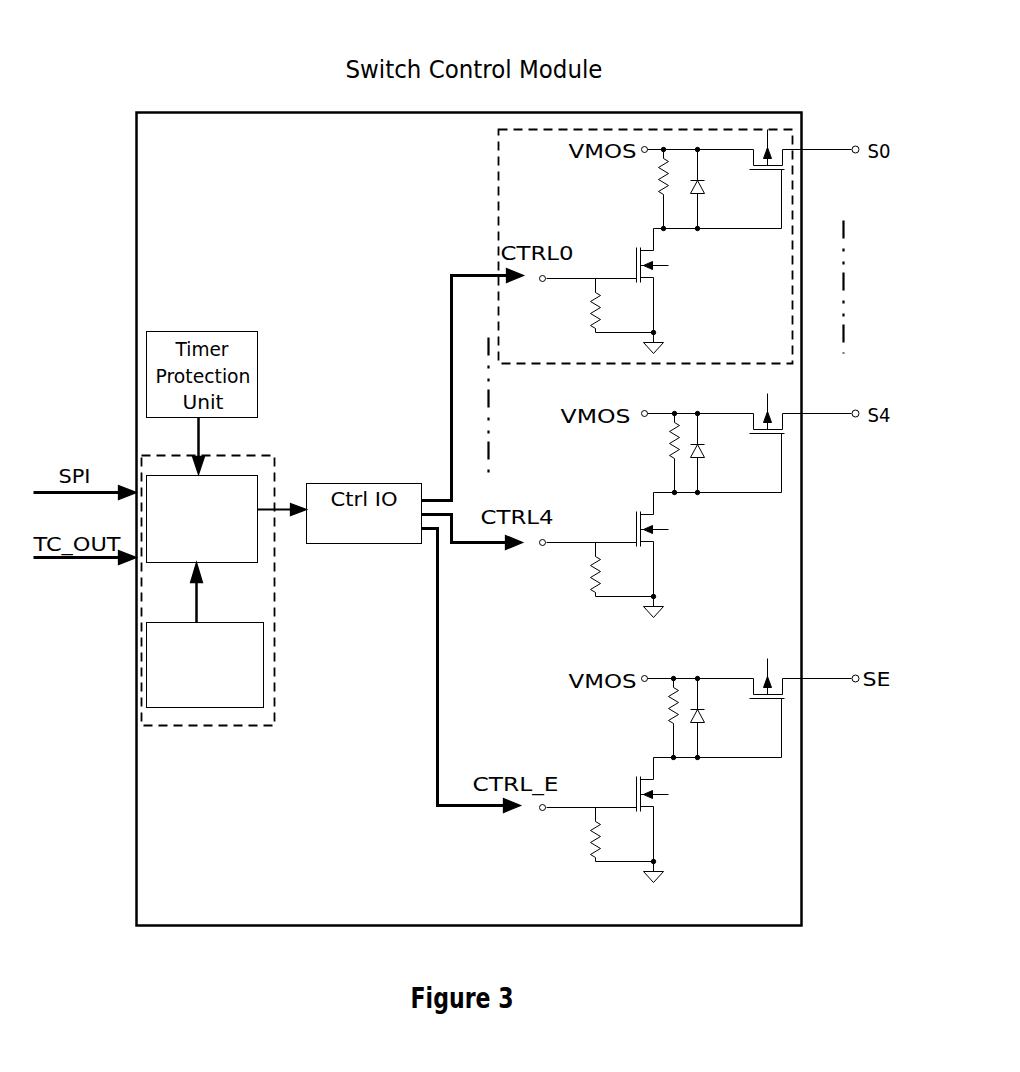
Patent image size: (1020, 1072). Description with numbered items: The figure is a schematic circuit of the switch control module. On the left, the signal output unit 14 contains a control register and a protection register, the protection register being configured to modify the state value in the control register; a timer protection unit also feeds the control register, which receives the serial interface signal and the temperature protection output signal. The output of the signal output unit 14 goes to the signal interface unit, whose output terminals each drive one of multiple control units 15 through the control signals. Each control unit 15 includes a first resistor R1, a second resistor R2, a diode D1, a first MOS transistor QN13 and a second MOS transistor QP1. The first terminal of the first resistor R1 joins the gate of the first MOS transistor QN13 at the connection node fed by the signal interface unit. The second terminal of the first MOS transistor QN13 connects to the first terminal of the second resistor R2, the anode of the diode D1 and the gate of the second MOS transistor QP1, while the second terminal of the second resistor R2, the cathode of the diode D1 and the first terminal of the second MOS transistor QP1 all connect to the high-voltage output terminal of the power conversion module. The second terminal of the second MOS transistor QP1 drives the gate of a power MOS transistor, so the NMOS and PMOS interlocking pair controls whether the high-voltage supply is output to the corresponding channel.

The signal output unit 14 is at (275, 465).
The control unit 15 is at (498, 173).
The second MOS transistor QP1 is at (762, 444).
The first MOS transistor QN13 is at (622, 530).
The diode D1 is at (712, 454).
The first resistor R1 is at (610, 570).
The second resistor R2 is at (654, 453).